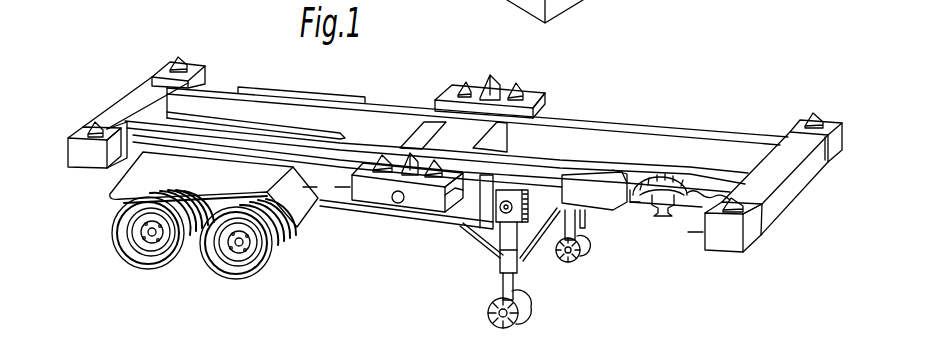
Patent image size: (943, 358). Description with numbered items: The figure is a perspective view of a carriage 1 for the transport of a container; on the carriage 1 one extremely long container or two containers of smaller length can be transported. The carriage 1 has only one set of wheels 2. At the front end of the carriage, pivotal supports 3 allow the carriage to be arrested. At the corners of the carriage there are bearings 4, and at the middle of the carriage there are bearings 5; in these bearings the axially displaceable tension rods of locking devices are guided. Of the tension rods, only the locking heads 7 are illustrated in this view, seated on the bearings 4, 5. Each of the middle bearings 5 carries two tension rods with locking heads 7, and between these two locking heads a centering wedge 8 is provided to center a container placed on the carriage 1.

The carriage 1 is at (608, 128).
The set of wheels 2 is at (151, 245).
The pivotal supports 3 is at (507, 245).
The bearings 4 is at (90, 165).
The bearings 5 is at (540, 97).
The locking heads 7 is at (95, 122).
The centering wedge 8 is at (412, 158).